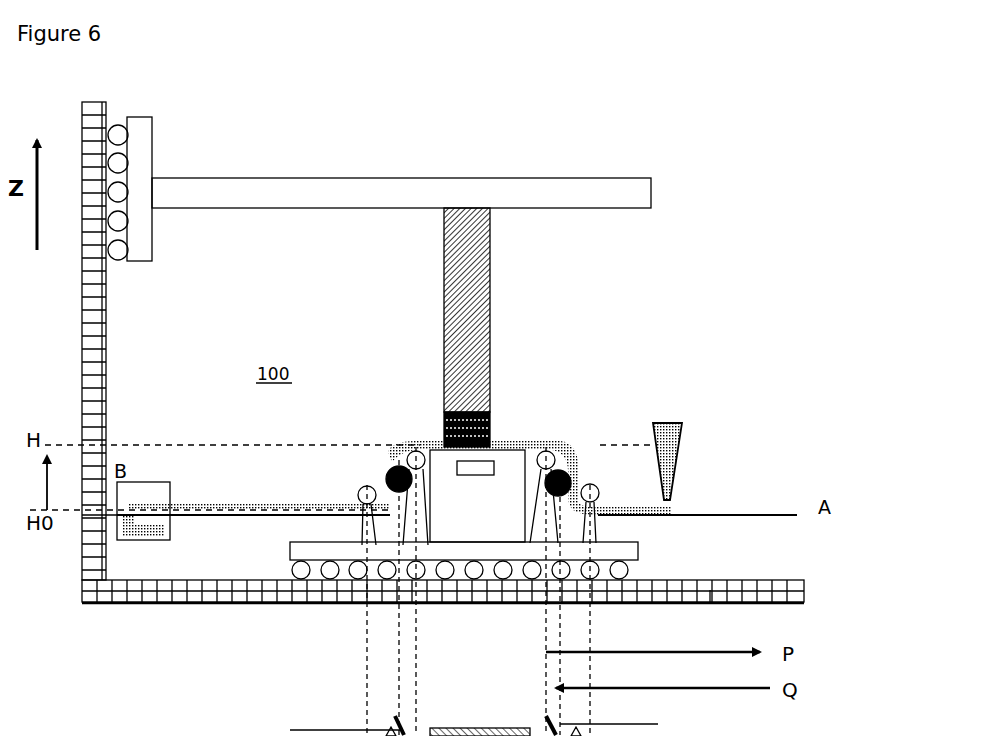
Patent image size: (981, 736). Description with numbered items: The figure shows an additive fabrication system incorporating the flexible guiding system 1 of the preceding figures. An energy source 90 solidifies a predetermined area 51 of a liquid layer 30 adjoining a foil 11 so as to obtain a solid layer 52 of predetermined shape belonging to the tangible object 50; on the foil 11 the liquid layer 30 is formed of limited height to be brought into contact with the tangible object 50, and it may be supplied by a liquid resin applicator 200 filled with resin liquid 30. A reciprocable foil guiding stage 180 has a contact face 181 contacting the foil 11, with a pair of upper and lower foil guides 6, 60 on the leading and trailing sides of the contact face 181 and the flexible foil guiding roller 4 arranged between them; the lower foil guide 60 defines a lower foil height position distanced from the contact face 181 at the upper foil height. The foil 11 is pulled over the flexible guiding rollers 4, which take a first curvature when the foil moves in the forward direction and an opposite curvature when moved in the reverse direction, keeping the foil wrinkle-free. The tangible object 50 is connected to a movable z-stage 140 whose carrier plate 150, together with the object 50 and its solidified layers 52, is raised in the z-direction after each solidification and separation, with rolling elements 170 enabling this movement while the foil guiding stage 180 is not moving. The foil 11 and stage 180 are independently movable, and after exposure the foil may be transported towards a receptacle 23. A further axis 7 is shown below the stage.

The rolling elements 170 is at (118, 128).
The movable z-stage 140 is at (333, 165).
The carrier plate 150 is at (470, 192).
The tangible object 50 is at (487, 333).
The predetermined area of the liquid layer 51 is at (447, 447).
The solid layer 52 is at (490, 447).
The contact face 181 is at (549, 447).
The energy source 90 is at (477, 496).
The flexible guiding system 1 is at (378, 606).
The lower foil guide 60 is at (338, 606).
The upper foil guide 6 is at (398, 467).
The flexible foil guiding roller 4 is at (388, 478).
The receptacle 23 is at (128, 492).
The liquid layer 30 is at (676, 517).
The foil 11 is at (797, 517).
The liquid resin applicator 200 is at (680, 458).
The reciprocable foil guiding stage 180 is at (275, 550).
The carriage axis 7 is at (710, 603).